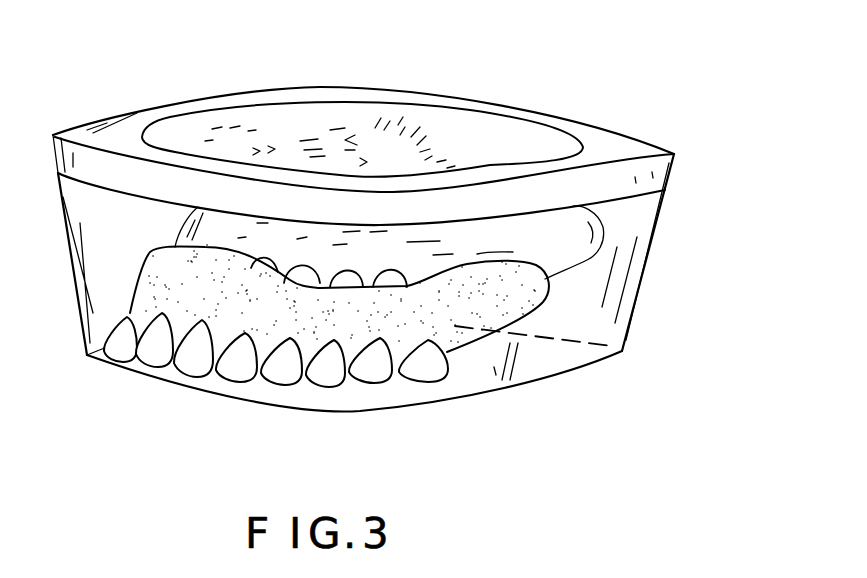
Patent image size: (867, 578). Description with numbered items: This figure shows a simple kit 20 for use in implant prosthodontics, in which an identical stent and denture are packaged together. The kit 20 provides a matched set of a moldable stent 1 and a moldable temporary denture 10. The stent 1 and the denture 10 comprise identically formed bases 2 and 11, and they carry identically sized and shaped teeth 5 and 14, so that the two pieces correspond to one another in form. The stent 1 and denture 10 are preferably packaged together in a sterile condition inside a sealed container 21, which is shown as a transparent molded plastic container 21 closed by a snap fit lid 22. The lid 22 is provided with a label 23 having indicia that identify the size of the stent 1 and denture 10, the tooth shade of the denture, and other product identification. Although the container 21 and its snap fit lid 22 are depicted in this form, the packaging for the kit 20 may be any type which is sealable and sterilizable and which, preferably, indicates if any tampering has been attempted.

The moldable stent 1 is at (628, 228).
The base 2 is at (421, 293).
The teeth 5 is at (312, 272).
The moldable temporary denture 10 is at (408, 343).
The base 11 is at (475, 343).
The teeth 14 is at (332, 378).
The kit 20 is at (459, 84).
The sealed container 21 is at (637, 327).
The lid 22 is at (593, 128).
The label 23 is at (282, 115).